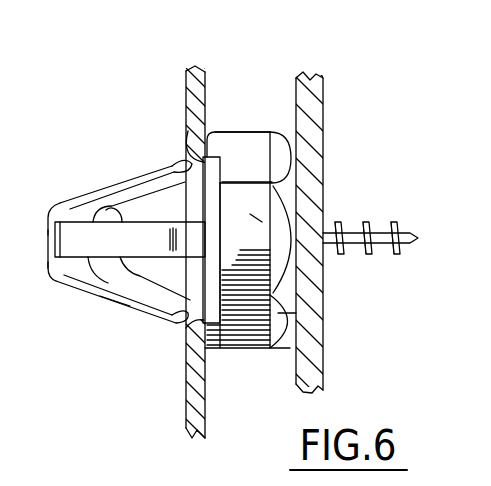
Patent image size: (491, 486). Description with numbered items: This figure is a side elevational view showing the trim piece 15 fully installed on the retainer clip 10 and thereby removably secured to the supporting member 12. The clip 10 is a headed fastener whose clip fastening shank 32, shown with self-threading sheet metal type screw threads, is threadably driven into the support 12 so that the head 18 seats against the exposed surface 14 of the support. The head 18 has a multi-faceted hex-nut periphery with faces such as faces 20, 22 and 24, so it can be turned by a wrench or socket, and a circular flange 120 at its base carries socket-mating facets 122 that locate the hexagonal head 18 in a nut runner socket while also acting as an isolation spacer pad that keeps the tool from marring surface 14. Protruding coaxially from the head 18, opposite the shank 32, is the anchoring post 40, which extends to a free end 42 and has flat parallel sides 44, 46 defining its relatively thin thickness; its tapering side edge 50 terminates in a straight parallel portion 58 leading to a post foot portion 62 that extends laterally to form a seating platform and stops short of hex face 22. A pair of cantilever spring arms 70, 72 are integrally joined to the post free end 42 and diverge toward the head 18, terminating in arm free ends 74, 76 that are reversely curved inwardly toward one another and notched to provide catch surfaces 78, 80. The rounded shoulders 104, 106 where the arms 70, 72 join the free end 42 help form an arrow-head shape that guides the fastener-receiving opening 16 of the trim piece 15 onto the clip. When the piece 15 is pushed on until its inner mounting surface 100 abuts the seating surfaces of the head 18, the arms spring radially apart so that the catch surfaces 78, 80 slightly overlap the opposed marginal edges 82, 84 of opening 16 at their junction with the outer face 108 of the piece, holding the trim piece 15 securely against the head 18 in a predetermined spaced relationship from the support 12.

The retainer clip 10 is at (103, 235).
The supporting member 12 is at (316, 218).
The exposed surface 14 is at (297, 380).
The planar sheet material member 15 is at (172, 229).
The fastener-receiving through-hole circular opening 16 is at (199, 208).
The head 18 is at (295, 221).
The hex nut face 20 is at (224, 131).
The hex nut face 22 is at (255, 218).
The hex nut face 24 is at (233, 348).
The clip fastening shank 32 is at (363, 217).
The anchoring post 40 is at (130, 261).
The free end 42 is at (44, 243).
The flat parallel side 44 is at (138, 220).
The flat parallel side 46 is at (108, 297).
The tapering side edge 50 is at (83, 230).
The straight parallel portion 58 is at (123, 202).
The post foot portion 62 is at (216, 248).
The spring arm 70 is at (112, 316).
The spring arm 72 is at (126, 168).
The arm free end 74 is at (323, 313).
The arm free end 76 is at (249, 157).
The catch surface 78 is at (186, 343).
The catch surface 80 is at (198, 160).
The marginal edge 82 is at (185, 318).
The marginal edge 84 is at (186, 167).
The inner mounting surface 100 is at (206, 80).
The rounded shoulder 104 is at (54, 281).
The rounded shoulder 106 is at (59, 201).
The outer face 108 is at (186, 403).
The circular flange 120 is at (285, 125).
The socket-mating facets 122 is at (285, 160).